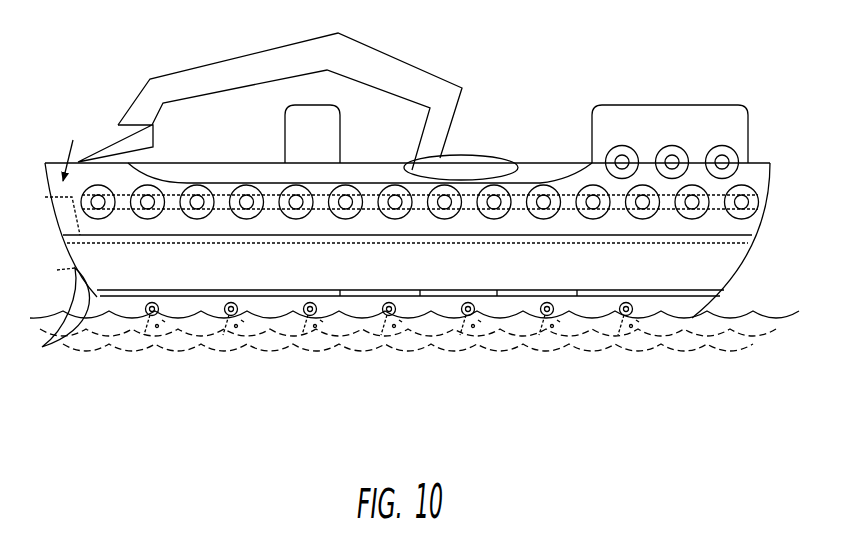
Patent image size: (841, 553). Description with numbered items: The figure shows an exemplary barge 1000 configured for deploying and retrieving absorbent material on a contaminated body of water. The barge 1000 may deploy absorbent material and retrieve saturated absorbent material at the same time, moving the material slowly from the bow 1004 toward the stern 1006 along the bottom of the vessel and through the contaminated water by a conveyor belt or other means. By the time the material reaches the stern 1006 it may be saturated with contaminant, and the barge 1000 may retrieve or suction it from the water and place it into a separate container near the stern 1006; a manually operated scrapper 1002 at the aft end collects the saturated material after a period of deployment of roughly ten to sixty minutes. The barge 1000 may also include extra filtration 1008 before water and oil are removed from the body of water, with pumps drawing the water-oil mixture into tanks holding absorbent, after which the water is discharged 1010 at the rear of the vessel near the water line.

The barge 1000 is at (231, 464).
The scrapper 1002 is at (60, 354).
The bow 1004 is at (659, 374).
The stern 1006 is at (164, 371).
The extra filtration 1008 is at (722, 293).
The discharge 1010 is at (640, 321).